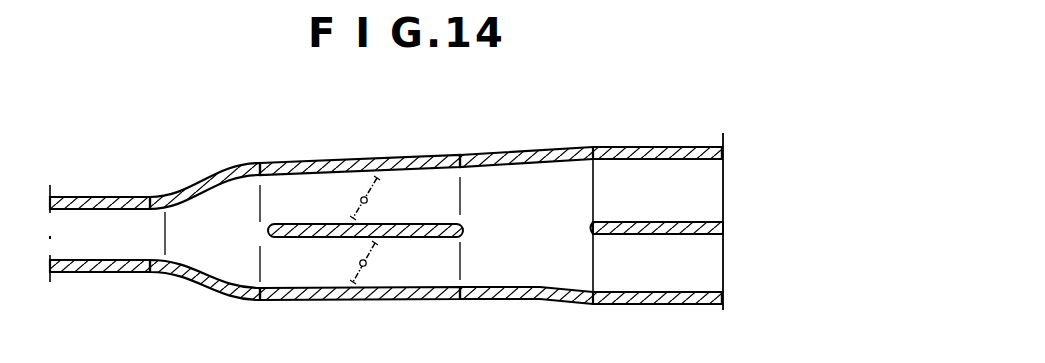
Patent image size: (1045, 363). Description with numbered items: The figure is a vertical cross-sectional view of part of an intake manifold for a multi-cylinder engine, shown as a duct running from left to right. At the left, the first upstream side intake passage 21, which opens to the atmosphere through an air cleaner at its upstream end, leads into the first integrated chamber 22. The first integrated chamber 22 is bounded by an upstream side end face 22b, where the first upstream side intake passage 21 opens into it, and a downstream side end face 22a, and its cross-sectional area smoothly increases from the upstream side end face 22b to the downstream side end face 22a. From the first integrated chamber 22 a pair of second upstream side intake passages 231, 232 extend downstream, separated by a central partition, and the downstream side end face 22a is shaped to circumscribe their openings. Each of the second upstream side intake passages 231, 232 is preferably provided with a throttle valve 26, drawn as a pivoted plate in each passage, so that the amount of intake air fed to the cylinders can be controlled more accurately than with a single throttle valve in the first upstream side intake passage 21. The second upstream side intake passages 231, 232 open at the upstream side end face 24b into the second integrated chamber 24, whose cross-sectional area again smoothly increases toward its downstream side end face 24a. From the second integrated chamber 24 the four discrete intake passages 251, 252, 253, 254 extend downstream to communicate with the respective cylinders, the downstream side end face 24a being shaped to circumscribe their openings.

The first upstream side intake passage 21 is at (97, 217).
The first integrated chamber 22 is at (198, 222).
The downstream side end face of the first integrated chamber 22a is at (258, 156).
The upstream side end face of the first integrated chamber 22b is at (165, 181).
The second upstream side intake passage 231 is at (412, 182).
The second upstream side intake passage 232 is at (440, 266).
The second integrated chamber 24 is at (513, 187).
The downstream side end face of the second integrated chamber 24a is at (593, 134).
The upstream side end face of the second integrated chamber 24b is at (460, 147).
The throttle valve 26 is at (360, 188).
The discrete intake passage 251 is at (707, 277).
The discrete intake passage 252 is at (707, 198).
The discrete intake passage 253 is at (658, 228).
The discrete intake passage 254 is at (657, 153).